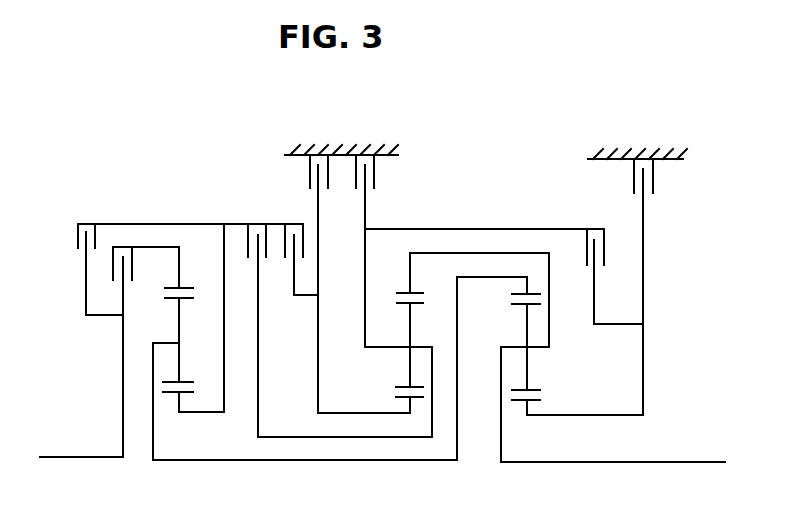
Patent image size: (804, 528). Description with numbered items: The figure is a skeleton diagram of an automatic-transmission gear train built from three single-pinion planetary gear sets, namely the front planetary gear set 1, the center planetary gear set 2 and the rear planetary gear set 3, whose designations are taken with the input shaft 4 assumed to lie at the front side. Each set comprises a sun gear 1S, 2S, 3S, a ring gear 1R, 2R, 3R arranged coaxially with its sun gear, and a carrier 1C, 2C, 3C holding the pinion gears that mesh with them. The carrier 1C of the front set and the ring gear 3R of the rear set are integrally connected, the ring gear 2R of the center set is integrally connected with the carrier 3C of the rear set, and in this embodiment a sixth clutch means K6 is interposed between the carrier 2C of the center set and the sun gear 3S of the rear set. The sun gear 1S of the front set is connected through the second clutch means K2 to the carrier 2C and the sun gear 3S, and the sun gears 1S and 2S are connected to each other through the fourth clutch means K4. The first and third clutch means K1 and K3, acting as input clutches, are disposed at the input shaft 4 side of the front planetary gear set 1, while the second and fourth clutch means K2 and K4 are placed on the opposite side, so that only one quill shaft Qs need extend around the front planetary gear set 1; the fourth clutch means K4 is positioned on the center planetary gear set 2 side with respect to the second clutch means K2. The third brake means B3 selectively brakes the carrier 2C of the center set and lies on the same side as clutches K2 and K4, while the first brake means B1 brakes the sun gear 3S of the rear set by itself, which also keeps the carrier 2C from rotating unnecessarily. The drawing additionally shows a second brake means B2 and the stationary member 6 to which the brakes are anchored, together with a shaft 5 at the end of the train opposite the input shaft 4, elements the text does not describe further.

The stationary housing / ground 6 is at (338, 154).
The quill shaft Qs is at (189, 224).
The third clutch means K3 is at (100, 258).
The first clutch means K1 is at (146, 341).
The second clutch means K2 is at (339, 319).
The fourth clutch means K4 is at (301, 248).
The sixth clutch means K6 is at (615, 265).
The first brake means B1 is at (663, 287).
The second brake B2 is at (343, 284).
The third brake means B3 is at (480, 251).
The front planetary gear set 1 is at (186, 420).
The ring gear of front planetary gear set 1R is at (185, 287).
The carrier of front planetary gear set 1C is at (166, 343).
The sun gear of front planetary gear set 1S is at (187, 395).
The center planetary gear set 2 is at (405, 418).
The ring gear of center planetary gear set 2R is at (411, 291).
The carrier of center planetary gear set 2C is at (411, 346).
The sun gear of center planetary gear set 2S is at (397, 400).
The rear planetary gear set 3 is at (526, 431).
The ring gear of rear planetary gear set 3R is at (511, 295).
The carrier of rear planetary gear set 3C is at (549, 349).
The sun gear of rear planetary gear set 3S is at (541, 401).
The input shaft 4 is at (81, 457).
The second output shaft 5 is at (669, 462).